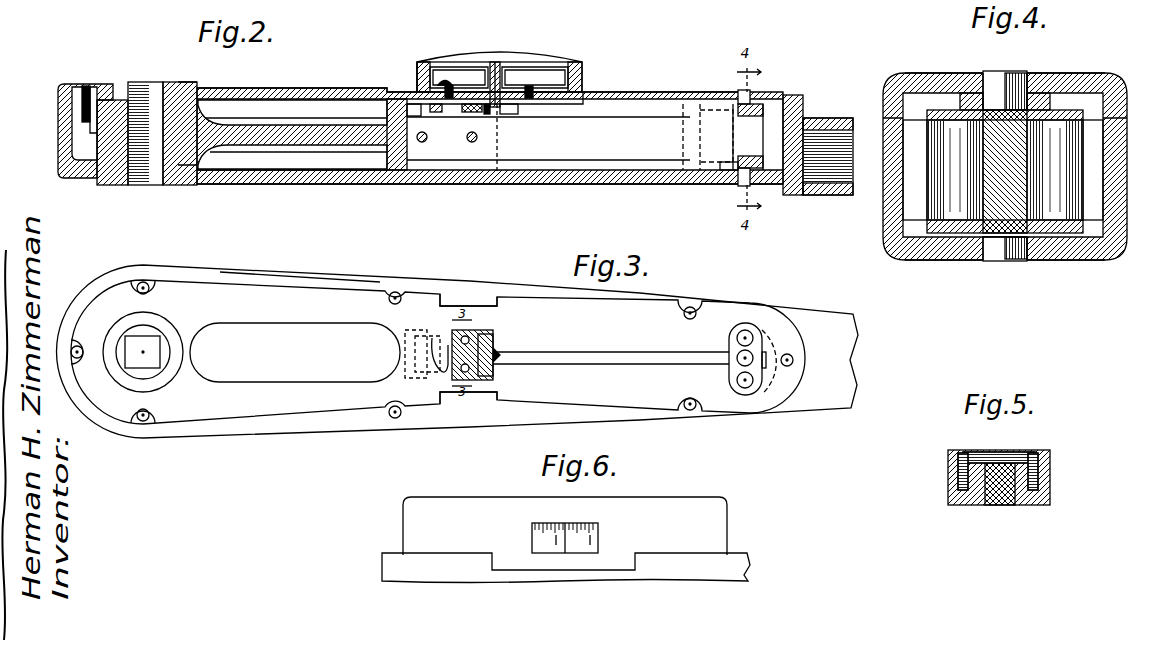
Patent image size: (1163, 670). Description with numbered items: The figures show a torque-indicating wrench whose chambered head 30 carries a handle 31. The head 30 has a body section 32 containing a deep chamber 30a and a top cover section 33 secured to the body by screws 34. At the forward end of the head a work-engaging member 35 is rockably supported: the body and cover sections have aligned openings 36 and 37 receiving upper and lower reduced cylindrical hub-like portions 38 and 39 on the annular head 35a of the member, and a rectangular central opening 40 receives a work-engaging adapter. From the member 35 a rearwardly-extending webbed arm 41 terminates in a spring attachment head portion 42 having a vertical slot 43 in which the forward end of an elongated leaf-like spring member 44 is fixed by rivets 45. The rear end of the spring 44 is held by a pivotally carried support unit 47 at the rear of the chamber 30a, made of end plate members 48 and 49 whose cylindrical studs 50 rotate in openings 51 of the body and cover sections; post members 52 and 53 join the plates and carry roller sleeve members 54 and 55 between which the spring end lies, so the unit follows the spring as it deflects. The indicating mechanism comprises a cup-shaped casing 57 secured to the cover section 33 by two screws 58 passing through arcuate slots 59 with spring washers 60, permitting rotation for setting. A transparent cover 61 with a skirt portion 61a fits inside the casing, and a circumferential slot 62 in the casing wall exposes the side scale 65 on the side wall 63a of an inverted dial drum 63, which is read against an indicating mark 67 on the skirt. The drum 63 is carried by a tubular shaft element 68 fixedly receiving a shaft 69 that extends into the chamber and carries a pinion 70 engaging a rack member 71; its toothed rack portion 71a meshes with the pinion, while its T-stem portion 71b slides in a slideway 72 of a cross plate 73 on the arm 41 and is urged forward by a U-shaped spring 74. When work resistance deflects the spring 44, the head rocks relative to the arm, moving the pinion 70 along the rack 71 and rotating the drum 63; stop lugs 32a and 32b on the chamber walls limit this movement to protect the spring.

In FIG. 2, the chambered head 30 is at (672, 92).
In FIG. 3, the chambered head 30 is at (763, 302).
In FIG. 4, the chambered head 30 is at (880, 110).
In FIG. 2, the chamber 30a is at (618, 172).
In FIG. 3, the chamber 30a is at (262, 290).
In FIG. 4, the chamber 30a is at (916, 232).
In FIG. 2, the handle 31 is at (812, 118).
In FIG. 4, the handle 31 is at (830, 130).
In FIG. 2, the body section 32 is at (290, 178).
In FIG. 3, the body section 32 is at (325, 280).
In FIG. 4, the body section 32 is at (1090, 260).
In FIG. 3, the stop lug 32a is at (490, 292).
In FIG. 3, the stop lug 32b is at (462, 410).
In FIG. 2, the top cover section 33 is at (283, 98).
In FIG. 4, the top cover section 33 is at (908, 74).
In FIG. 6, the top cover section 33 is at (750, 556).
In FIG. 2, the screws 34 is at (683, 126).
In FIG. 2, the work-engaging member 35 is at (96, 145).
In FIG. 3, the work-engaging member 35 is at (180, 322).
In FIG. 2, the annular head 35a is at (108, 183).
In FIG. 3, the annular head 35a is at (170, 372).
In FIG. 2, the opening 36 is at (170, 186).
In FIG. 2, the opening 37 is at (100, 84).
In FIG. 2, the hub-like portion 38 is at (122, 185).
In FIG. 2, the hub-like portion 39 is at (185, 82).
In FIG. 3, the hub-like portion 39 is at (172, 352).
In FIG. 2, the central opening 40 is at (145, 82).
In FIG. 3, the central opening 40 is at (128, 338).
In FIG. 2, the webbed arm 41 is at (345, 132).
In FIG. 3, the webbed arm 41 is at (295, 352).
In FIG. 2, the spring attachment head portion 42 is at (392, 172).
In FIG. 3, the spring attachment head portion 42 is at (400, 384).
In FIG. 5, the spring attachment head portion 42 is at (960, 506).
In FIG. 2, the slot 43 is at (412, 172).
In FIG. 3, the slot 43 is at (405, 352).
In FIG. 2, the spring member 44 is at (563, 155).
In FIG. 3, the spring member 44 is at (637, 364).
In FIG. 4, the spring member 44 is at (1010, 212).
In FIG. 5, the spring member 44 is at (998, 506).
In FIG. 2, the rivets 45 is at (466, 140).
In FIG. 3, the rivets 45 is at (428, 334).
In FIG. 2, the support unit 47 is at (790, 140).
In FIG. 3, the support unit 47 is at (795, 362).
In FIG. 4, the support unit 47 is at (978, 234).
In FIG. 2, the end plate member 48 is at (735, 172).
In FIG. 4, the end plate member 48 is at (928, 226).
In FIG. 2, the end plate member 49 is at (740, 94).
In FIG. 3, the end plate member 49 is at (735, 352).
In FIG. 4, the end plate member 49 is at (930, 112).
In FIG. 2, the cylindrical stud 50 is at (752, 92).
In FIG. 3, the cylindrical stud 50 is at (735, 364).
In FIG. 4, the cylindrical stud 50 is at (996, 82).
In FIG. 4, the openings 51 is at (1010, 86).
In FIG. 3, the post member 52 is at (745, 330).
In FIG. 4, the post member 52 is at (950, 145).
In FIG. 3, the post member 53 is at (745, 388).
In FIG. 4, the post member 53 is at (1060, 110).
In FIG. 3, the roller sleeve member 54 is at (790, 338).
In FIG. 4, the roller sleeve member 54 is at (927, 200).
In FIG. 2, the roller sleeve member 55 is at (750, 130).
In FIG. 3, the roller sleeve member 55 is at (790, 372).
In FIG. 4, the roller sleeve member 55 is at (1083, 128).
In FIG. 2, the casing 57 is at (586, 76).
In FIG. 6, the casing 57 is at (727, 518).
In FIG. 2, the screws 58 is at (418, 92).
In FIG. 4, the arcuate slots 59 is at (1000, 260).
In FIG. 2, the spring washers 60 is at (460, 80).
In FIG. 2, the transparent cover 61 is at (522, 56).
In FIG. 2, the skirt portion 61a is at (582, 60).
In FIG. 6, the slot 62 is at (598, 537).
In FIG. 2, the dial drum 63 is at (446, 66).
In FIG. 2, the side wall 63a is at (420, 64).
In FIG. 6, the scale 65 is at (556, 545).
In FIG. 6, the indicating mark 67 is at (566, 545).
In FIG. 2, the tubular shaft element 68 is at (494, 64).
In FIG. 2, the shaft 69 is at (500, 62).
In FIG. 2, the pinion 70 is at (505, 110).
In FIG. 3, the pinion 70 is at (500, 362).
In FIG. 2, the rack member 71 is at (488, 112).
In FIG. 3, the rack member 71 is at (500, 338).
In FIG. 5, the rack member 71 is at (998, 452).
In FIG. 3, the toothed rack portion 71a is at (498, 352).
In FIG. 3, the T-stem portion 71b is at (496, 372).
In FIG. 2, the slideway 72 is at (435, 110).
In FIG. 5, the slideway 72 is at (1016, 455).
In FIG. 2, the cross plate 73 is at (470, 112).
In FIG. 3, the cross plate 73 is at (456, 328).
In FIG. 5, the cross plate 73 is at (963, 455).
In FIG. 3, the U-shaped spring 74 is at (438, 384).